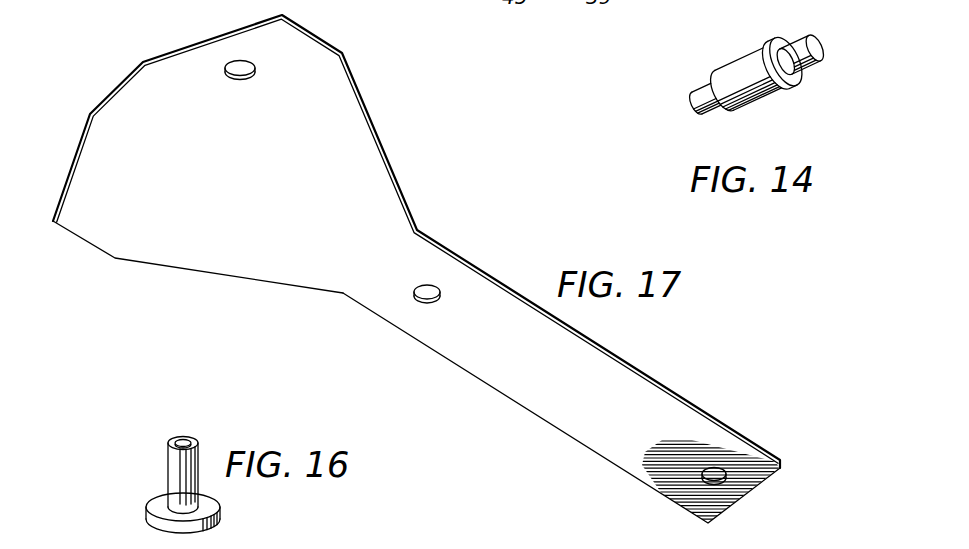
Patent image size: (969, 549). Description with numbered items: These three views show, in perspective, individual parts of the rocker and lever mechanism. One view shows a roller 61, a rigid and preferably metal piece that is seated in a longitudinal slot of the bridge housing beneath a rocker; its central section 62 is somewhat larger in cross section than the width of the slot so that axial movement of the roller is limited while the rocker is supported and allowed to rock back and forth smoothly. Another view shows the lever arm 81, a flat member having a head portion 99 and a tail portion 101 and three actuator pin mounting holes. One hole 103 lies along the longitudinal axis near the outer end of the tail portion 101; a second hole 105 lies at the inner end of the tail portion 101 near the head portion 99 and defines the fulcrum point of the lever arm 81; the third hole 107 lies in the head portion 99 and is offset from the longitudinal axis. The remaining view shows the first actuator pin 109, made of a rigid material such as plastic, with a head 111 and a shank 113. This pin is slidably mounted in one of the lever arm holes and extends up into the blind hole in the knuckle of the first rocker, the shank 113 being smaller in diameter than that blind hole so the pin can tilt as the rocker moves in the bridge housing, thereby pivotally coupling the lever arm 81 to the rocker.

In FIG. 17, the lever arm 81 is at (419, 269).
In FIG. 17, the head portion 99 is at (259, 278).
In FIG. 17, the tail portion 101 is at (540, 393).
In FIG. 17, the hole 103 is at (718, 464).
In FIG. 17, the second hole 105 is at (435, 305).
In FIG. 17, the third hole 107 is at (229, 80).
In FIG. 14, the roller 61 is at (741, 76).
In FIG. 14, the knurled surface 62 is at (692, 76).
In FIG. 16, the first actuator pin 109 is at (188, 476).
In FIG. 16, the head 111 is at (221, 520).
In FIG. 16, the shank 113 is at (198, 453).